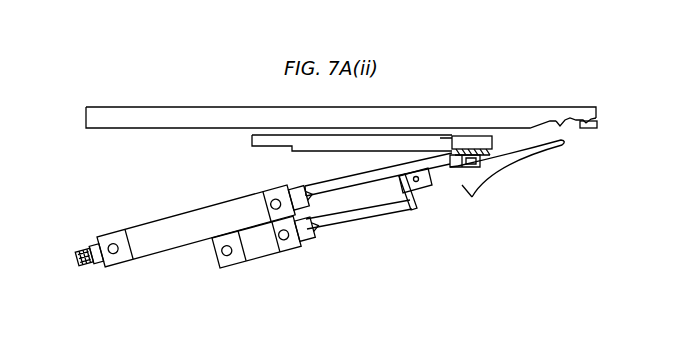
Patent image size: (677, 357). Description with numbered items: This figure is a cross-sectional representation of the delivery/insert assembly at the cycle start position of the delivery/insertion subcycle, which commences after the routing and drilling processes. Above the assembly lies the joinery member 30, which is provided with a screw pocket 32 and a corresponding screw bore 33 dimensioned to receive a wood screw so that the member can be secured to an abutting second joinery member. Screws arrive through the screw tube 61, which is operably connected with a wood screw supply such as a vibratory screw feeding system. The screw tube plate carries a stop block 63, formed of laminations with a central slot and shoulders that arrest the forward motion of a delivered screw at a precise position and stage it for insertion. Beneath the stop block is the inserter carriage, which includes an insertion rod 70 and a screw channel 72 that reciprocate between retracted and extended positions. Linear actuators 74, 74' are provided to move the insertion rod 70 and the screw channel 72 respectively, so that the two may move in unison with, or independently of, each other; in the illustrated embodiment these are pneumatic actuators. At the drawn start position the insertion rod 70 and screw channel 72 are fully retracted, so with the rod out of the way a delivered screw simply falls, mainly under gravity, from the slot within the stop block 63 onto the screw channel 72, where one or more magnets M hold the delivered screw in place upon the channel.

The joinery member 30 is at (114, 108).
The screw pocket 32 is at (567, 120).
The screw bore 33 is at (597, 118).
The screw tube 61 is at (262, 149).
The stop block 63 is at (473, 150).
The insertion rod 70 is at (352, 157).
The screw channel 72 is at (421, 178).
The linear actuator 74 is at (170, 227).
The linear actuator 74' is at (312, 258).
The magnet M is at (466, 172).